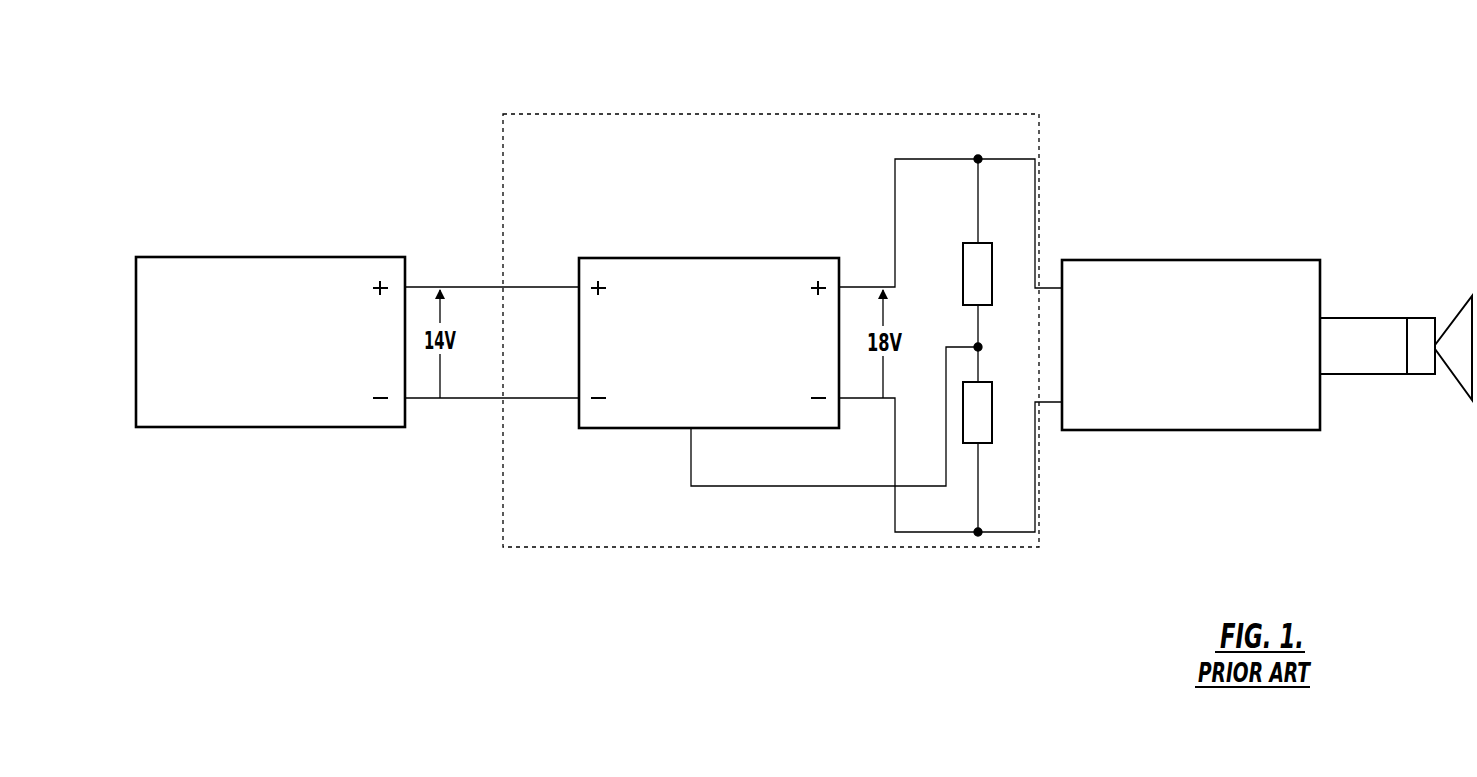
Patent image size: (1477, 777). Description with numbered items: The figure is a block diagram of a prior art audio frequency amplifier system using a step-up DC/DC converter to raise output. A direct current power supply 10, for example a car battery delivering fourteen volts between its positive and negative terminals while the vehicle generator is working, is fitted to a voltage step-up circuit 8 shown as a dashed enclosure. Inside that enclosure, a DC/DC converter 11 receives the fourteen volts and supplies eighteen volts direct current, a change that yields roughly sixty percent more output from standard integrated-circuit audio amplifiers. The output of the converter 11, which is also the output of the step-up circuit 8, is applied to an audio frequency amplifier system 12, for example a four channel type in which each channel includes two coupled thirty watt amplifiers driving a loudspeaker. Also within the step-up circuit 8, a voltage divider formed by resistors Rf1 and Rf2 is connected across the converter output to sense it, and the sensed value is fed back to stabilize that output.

The voltage step-up circuit 8 is at (716, 112).
The direct current power supply 10 is at (257, 276).
The DC/DC converter 11 is at (706, 274).
The audio frequency amplifier system 12 is at (1178, 275).
The voltage divider resistor Rf1 is at (988, 253).
The voltage divider resistor Rf2 is at (988, 439).